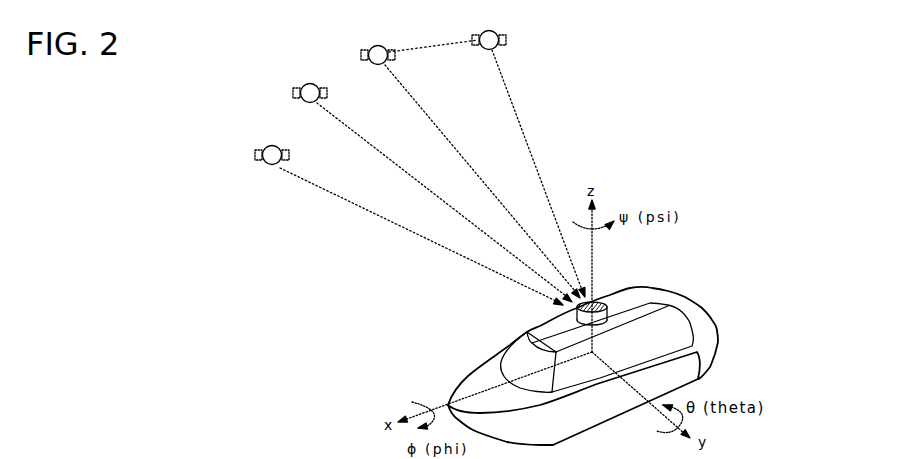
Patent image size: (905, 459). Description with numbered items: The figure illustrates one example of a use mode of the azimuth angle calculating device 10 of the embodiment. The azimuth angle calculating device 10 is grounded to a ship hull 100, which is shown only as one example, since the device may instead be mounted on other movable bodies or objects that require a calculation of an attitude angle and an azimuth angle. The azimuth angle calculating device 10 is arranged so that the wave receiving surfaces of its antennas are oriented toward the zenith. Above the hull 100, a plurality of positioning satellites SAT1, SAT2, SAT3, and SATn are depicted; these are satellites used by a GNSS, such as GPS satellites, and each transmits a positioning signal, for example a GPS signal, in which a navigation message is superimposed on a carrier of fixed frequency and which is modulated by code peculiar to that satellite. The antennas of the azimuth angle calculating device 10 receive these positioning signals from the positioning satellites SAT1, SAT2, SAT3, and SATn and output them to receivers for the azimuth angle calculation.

The azimuth angle calculating device 10 is at (604, 294).
The ship hull 100 is at (678, 296).
The positioning satellite SAT1 is at (277, 147).
The positioning satellite SAT2 is at (325, 76).
The positioning satellite SAT3 is at (396, 36).
The positioning satellite SATn is at (511, 22).